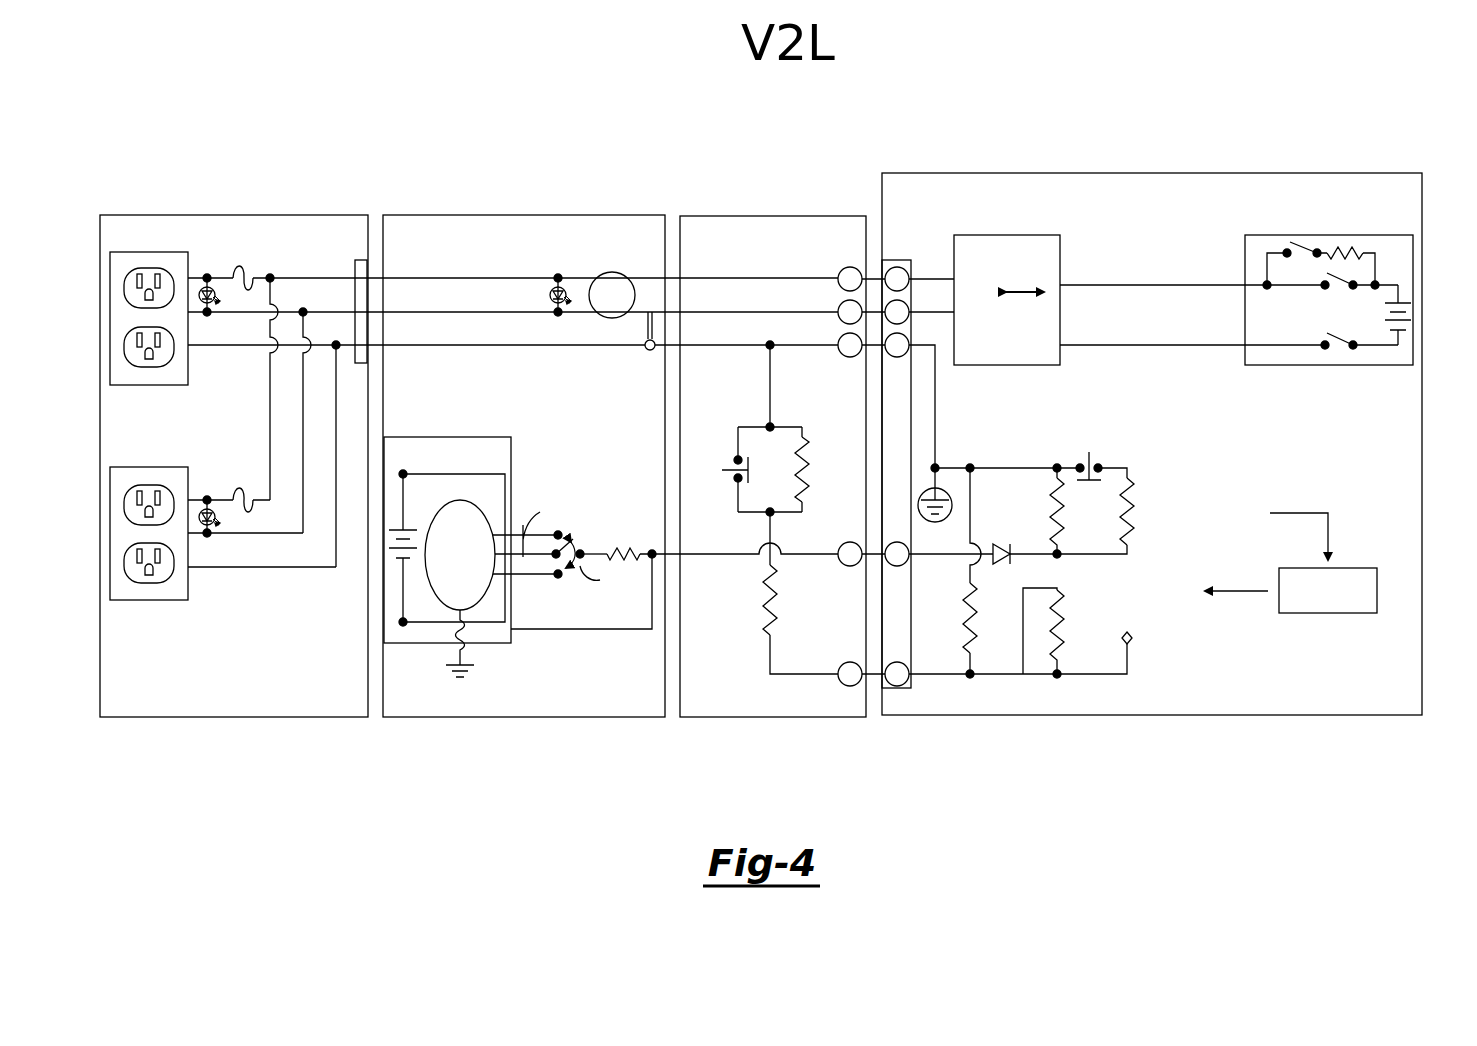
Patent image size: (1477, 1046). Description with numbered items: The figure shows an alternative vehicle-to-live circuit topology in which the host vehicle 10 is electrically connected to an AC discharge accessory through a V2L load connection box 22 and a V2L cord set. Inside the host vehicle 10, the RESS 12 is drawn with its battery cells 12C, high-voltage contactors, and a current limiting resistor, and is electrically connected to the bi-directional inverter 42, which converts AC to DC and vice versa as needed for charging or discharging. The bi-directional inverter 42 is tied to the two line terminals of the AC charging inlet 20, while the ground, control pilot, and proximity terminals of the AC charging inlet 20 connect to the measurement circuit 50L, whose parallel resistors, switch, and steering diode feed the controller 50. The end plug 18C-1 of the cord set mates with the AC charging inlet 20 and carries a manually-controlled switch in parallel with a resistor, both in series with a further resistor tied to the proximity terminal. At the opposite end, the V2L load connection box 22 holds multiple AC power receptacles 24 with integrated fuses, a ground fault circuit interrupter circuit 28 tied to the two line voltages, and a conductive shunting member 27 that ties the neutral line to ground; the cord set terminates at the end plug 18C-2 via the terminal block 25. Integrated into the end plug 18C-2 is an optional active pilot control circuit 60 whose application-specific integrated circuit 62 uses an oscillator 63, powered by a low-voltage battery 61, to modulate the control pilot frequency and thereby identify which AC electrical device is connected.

The host vehicle 10 is at (1152, 173).
The RESS 12 is at (1358, 276).
The battery cells 12C is at (1428, 306).
The end plug 18C-1 is at (773, 717).
The end plug 18C-2 is at (523, 717).
The AC charging inlet 20 is at (895, 688).
The V2L load connection box 22 is at (283, 717).
The AC power receptacles 24 is at (150, 252).
The terminal block 25 is at (353, 269).
The conductive shunting member 27 is at (643, 326).
The ground fault circuit interrupter circuit 28 is at (637, 290).
The bi-directional inverter 42 is at (1023, 365).
The controller 50 is at (1328, 613).
The measurement circuit 50L is at (1166, 475).
The active pilot control circuit 60 is at (547, 464).
The low-voltage battery 61 is at (396, 566).
The application-specific integrated circuit 62 is at (469, 437).
The oscillator 63 is at (448, 596).